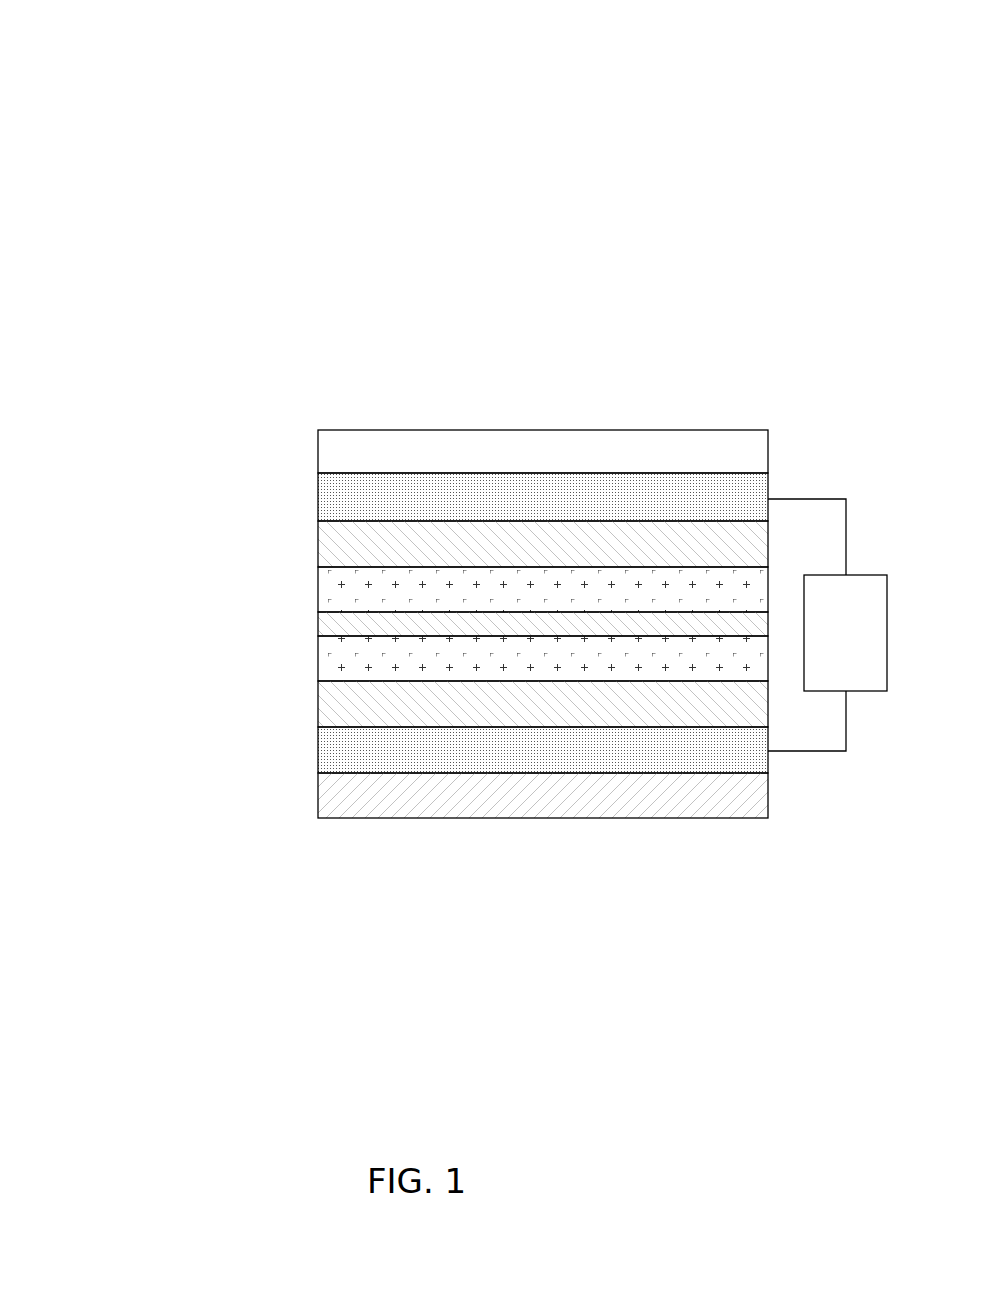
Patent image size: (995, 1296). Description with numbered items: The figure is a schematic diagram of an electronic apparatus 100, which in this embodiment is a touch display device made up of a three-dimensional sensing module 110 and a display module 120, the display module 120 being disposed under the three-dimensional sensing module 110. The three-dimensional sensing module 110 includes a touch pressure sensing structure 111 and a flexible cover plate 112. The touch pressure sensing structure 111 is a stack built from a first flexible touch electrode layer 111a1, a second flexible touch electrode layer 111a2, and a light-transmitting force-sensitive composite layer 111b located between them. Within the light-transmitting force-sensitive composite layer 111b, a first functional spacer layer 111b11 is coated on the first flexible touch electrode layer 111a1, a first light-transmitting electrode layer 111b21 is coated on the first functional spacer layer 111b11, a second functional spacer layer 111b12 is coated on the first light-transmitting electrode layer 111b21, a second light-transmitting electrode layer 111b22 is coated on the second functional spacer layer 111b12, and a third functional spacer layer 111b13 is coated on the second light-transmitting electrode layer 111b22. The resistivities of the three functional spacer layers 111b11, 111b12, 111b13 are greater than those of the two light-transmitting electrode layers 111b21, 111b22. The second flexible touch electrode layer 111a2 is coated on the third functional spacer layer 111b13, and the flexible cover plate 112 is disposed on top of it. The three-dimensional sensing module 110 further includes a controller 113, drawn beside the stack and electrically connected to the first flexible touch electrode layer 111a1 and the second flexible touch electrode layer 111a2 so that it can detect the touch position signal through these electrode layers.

The electronic apparatus 100 is at (94, 51).
The three-dimensional sensing module 110 is at (773, 172).
The touch pressure sensing structure 111 is at (80, 475).
The flexible cover plate 112 is at (762, 452).
The controller 113 is at (873, 581).
The first flexible touch electrode layer 111a1 is at (325, 775).
The second flexible touch electrode layer 111a2 is at (325, 500).
The light-transmitting force-sensitive composite layer 111b is at (172, 552).
The first functional spacer layer 111b11 is at (325, 713).
The second functional spacer layer 111b12 is at (330, 622).
The third functional spacer layer 111b13 is at (325, 543).
The first light-transmitting electrode layer 111b21 is at (327, 666).
The second light-transmitting electrode layer 111b22 is at (330, 592).
The display module 120 is at (762, 800).